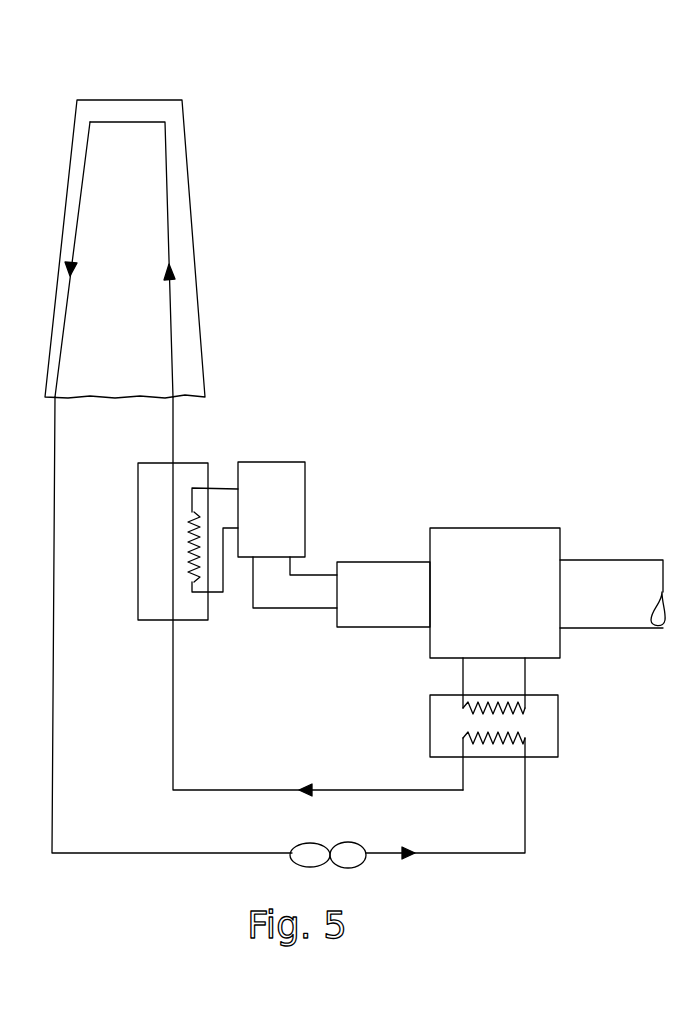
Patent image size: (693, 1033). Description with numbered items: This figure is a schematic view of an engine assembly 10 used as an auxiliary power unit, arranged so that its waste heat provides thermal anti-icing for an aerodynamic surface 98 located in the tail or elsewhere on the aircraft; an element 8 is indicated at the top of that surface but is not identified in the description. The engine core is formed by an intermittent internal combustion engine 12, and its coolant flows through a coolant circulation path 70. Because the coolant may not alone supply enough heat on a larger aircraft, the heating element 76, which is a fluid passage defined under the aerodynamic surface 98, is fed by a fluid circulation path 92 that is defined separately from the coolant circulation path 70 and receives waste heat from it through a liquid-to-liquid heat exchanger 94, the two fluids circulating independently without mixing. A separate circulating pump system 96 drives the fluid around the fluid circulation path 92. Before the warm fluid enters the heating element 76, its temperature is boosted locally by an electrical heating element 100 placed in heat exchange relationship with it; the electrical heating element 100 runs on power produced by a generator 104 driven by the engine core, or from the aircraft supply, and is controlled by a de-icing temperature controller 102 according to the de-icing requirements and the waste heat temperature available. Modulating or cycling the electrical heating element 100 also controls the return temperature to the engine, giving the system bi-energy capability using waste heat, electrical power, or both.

The cooling tower 8 is at (157, 212).
The aerodynamic surface 98 is at (168, 110).
The heating element 76 is at (165, 180).
The electrical heating element 100 is at (195, 468).
The de-icing temperature controller 102 is at (282, 493).
The generator 104 is at (388, 577).
The engine assembly 10 is at (532, 465).
The intermittent internal combustion engine 12 is at (535, 560).
The coolant circulation path 70 is at (528, 673).
The heat exchanger 94 is at (558, 722).
The fluid circulation path 92 is at (528, 832).
The circulating pump system 96 is at (350, 842).